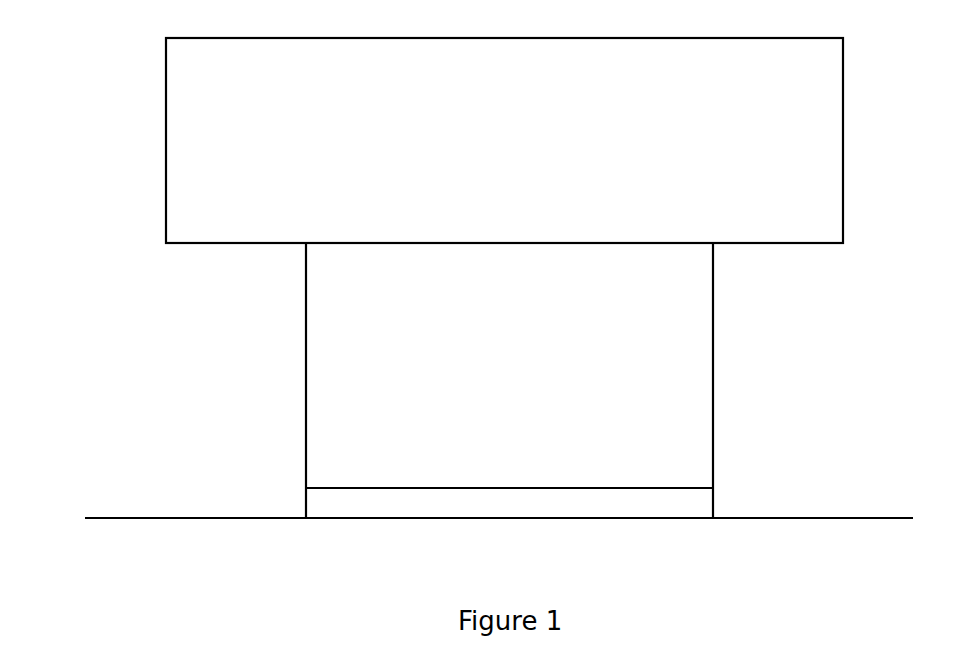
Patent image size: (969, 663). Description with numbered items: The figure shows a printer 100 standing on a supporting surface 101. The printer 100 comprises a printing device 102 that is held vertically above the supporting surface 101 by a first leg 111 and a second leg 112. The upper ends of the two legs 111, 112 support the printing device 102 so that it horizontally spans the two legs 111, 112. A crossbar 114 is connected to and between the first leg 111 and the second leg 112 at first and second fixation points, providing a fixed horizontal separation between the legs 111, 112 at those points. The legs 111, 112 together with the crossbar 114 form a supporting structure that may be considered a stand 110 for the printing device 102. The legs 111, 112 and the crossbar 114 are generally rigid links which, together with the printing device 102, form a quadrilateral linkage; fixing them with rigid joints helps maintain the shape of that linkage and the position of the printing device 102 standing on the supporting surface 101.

The printer 100 is at (108, 52).
The supporting surface 101 is at (510, 556).
The printing device 102 is at (530, 158).
The stand 110 is at (196, 365).
The first leg 111 is at (305, 446).
The second leg 112 is at (715, 408).
The crossbar 114 is at (455, 488).